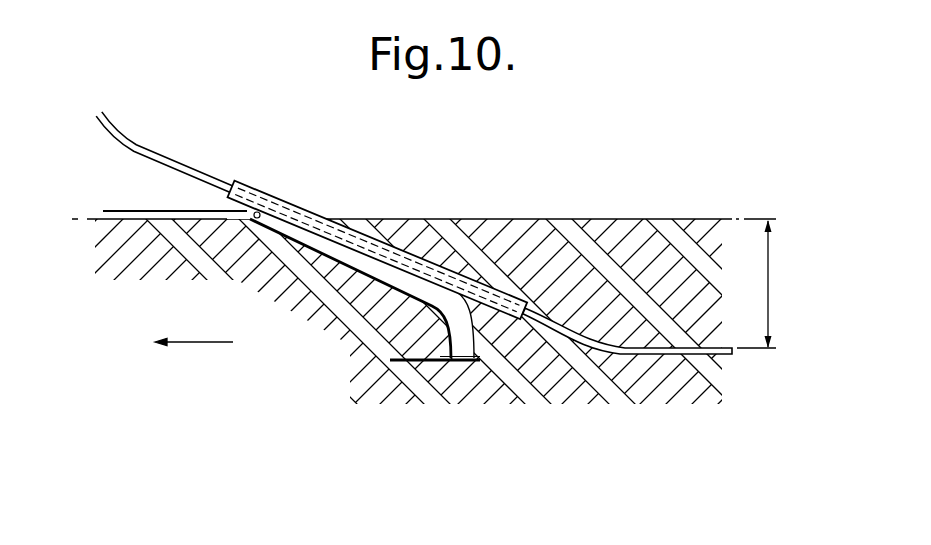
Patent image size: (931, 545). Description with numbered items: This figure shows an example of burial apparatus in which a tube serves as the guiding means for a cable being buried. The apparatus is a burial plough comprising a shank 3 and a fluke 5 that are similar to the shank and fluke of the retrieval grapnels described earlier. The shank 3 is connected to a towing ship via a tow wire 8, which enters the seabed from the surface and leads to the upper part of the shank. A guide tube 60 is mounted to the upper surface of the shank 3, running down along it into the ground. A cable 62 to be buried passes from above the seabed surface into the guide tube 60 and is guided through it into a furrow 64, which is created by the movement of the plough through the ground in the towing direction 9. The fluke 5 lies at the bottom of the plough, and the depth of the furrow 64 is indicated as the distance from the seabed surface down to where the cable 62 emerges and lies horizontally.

The shank 3 is at (333, 248).
The fluke 5 is at (457, 362).
The tow wire 8 is at (128, 210).
The towing direction 9 is at (195, 342).
The guide tube 60 is at (288, 202).
The cable 62 is at (162, 151).
The furrow 64 is at (768, 285).